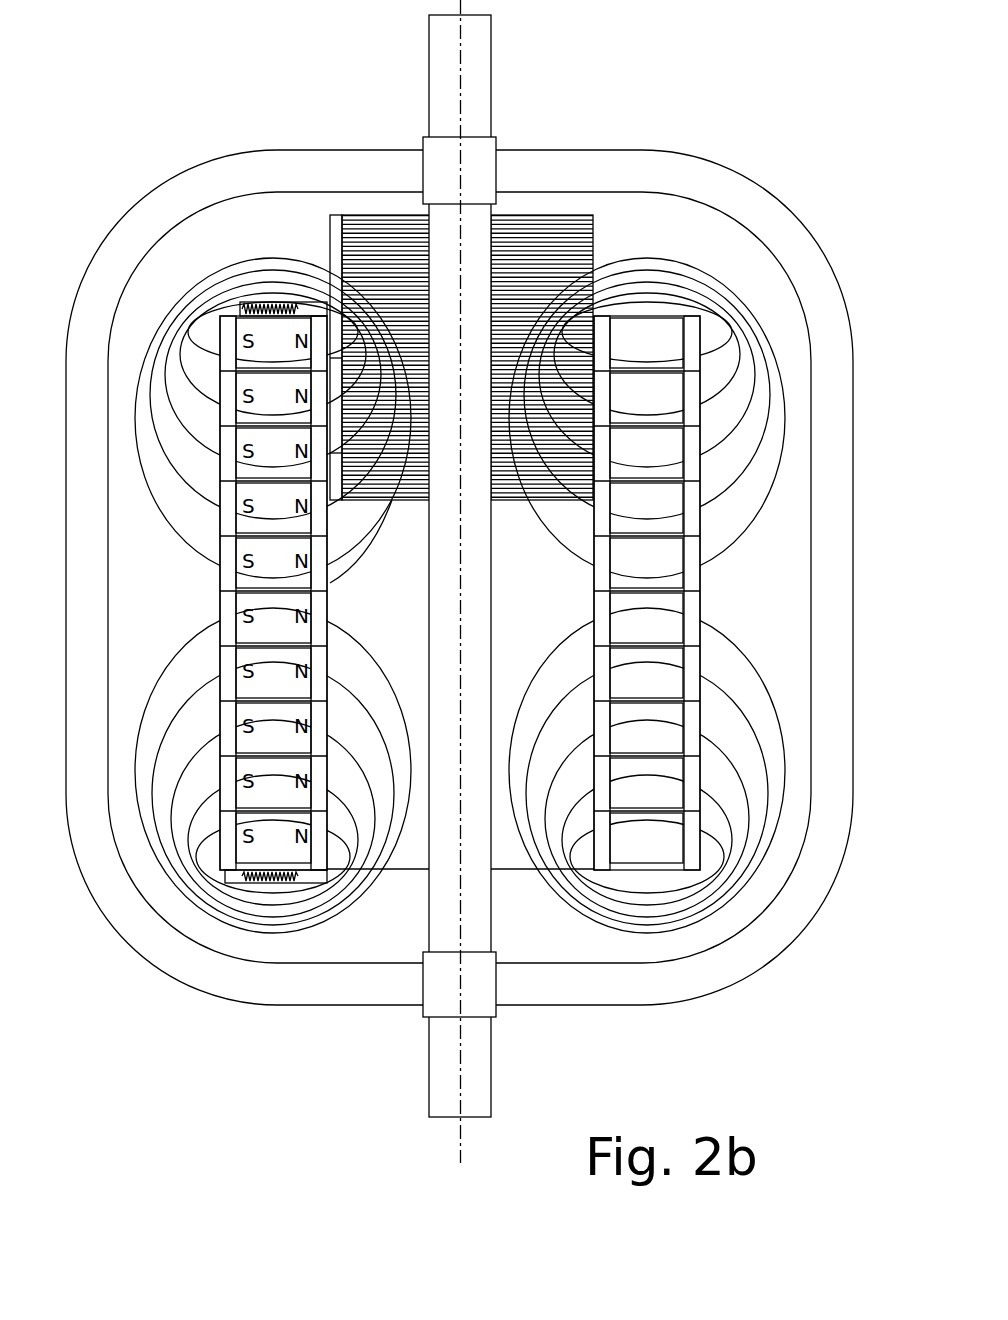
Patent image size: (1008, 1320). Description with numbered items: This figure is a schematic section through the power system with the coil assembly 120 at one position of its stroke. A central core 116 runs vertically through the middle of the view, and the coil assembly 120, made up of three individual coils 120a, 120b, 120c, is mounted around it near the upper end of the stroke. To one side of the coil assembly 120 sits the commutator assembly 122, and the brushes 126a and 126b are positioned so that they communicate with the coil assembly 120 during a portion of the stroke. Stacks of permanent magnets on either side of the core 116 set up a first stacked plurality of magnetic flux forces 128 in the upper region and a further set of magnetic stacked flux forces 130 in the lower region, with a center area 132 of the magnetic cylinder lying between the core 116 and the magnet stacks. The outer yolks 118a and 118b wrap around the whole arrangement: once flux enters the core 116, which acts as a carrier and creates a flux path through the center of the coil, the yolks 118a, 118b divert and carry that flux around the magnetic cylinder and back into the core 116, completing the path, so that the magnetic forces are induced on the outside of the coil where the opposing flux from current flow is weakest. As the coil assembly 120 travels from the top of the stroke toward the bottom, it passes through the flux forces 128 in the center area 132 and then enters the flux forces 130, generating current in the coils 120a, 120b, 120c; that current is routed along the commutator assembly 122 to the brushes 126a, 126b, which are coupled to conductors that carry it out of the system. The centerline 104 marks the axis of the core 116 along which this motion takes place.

The rotational axis 104 is at (457, 1147).
The core 116 is at (481, 93).
The yolk 118a is at (220, 182).
The yolk 118b is at (680, 174).
The coil assembly 120 is at (382, 224).
The individual coil 120a is at (520, 230).
The individual coil 120b is at (597, 300).
The individual coil 120c is at (370, 535).
The commutator assembly 122 is at (328, 245).
The brush 126a is at (282, 297).
The brush 126b is at (273, 883).
The first stacked plurality of magnetic flux forces 128 is at (202, 510).
The magnetic stacked flux forces 130 is at (305, 917).
The center area 132 is at (533, 567).